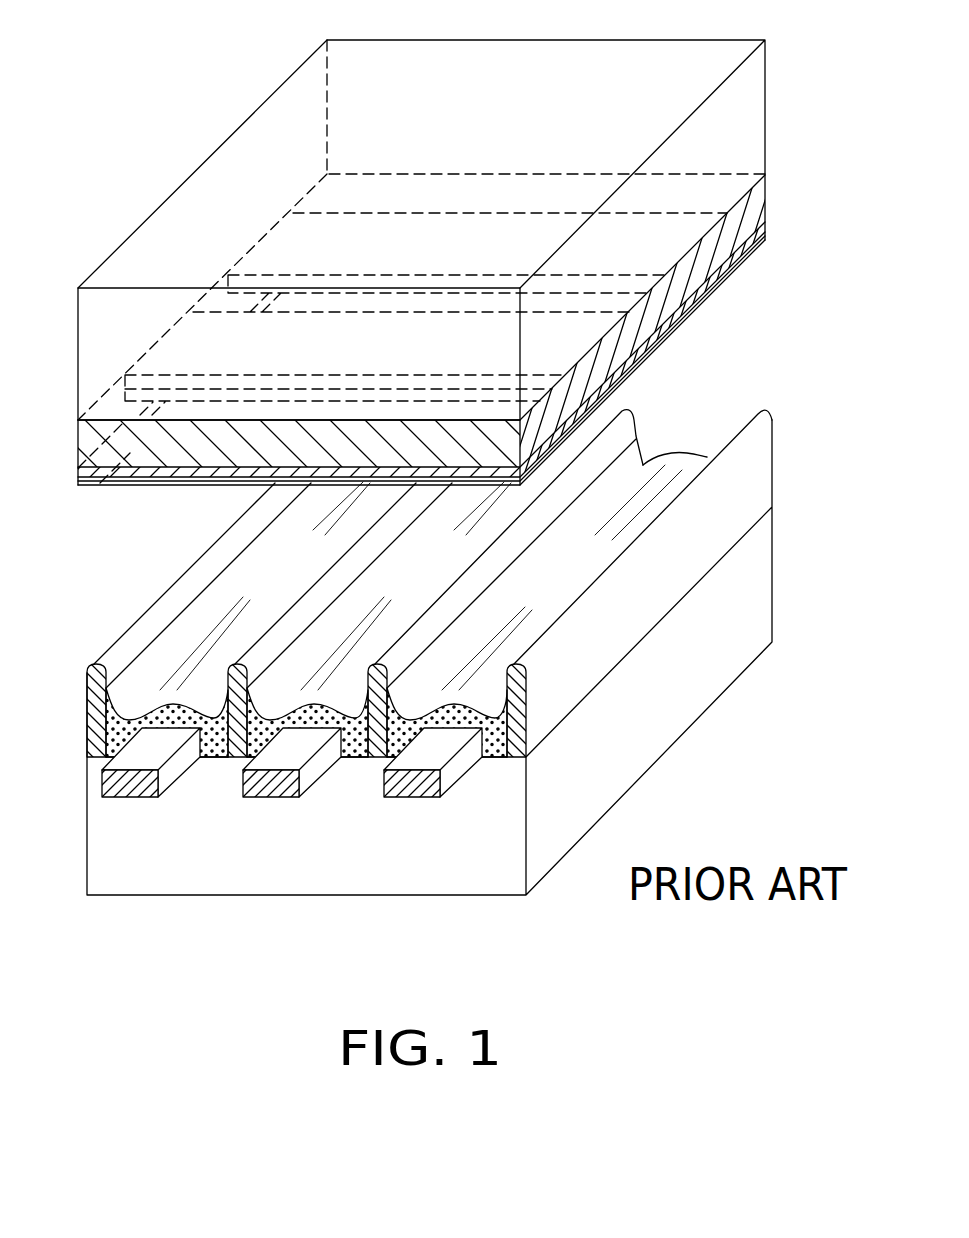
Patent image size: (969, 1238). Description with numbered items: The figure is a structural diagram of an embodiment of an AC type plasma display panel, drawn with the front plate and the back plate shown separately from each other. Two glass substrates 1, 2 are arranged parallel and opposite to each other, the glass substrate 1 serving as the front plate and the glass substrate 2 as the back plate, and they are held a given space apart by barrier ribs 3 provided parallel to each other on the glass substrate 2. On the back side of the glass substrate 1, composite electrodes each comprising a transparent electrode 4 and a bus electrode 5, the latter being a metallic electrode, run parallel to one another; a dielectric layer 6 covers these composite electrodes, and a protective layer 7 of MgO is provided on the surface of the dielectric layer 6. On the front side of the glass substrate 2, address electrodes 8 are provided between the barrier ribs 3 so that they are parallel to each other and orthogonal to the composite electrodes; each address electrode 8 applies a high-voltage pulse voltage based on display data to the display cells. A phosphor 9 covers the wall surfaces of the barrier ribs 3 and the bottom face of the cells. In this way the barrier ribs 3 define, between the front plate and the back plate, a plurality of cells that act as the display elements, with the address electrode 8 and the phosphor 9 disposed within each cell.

The glass substrate 1 is at (750, 86).
The glass substrate 2 is at (755, 592).
The barrier ribs 3 is at (752, 465).
The transparent electrode 4 is at (733, 207).
The bus electrode 5 is at (730, 260).
The dielectric layer 6 is at (690, 310).
The protective layer 7 is at (668, 340).
The address electrodes 8 is at (416, 797).
The phosphor 9 is at (490, 752).